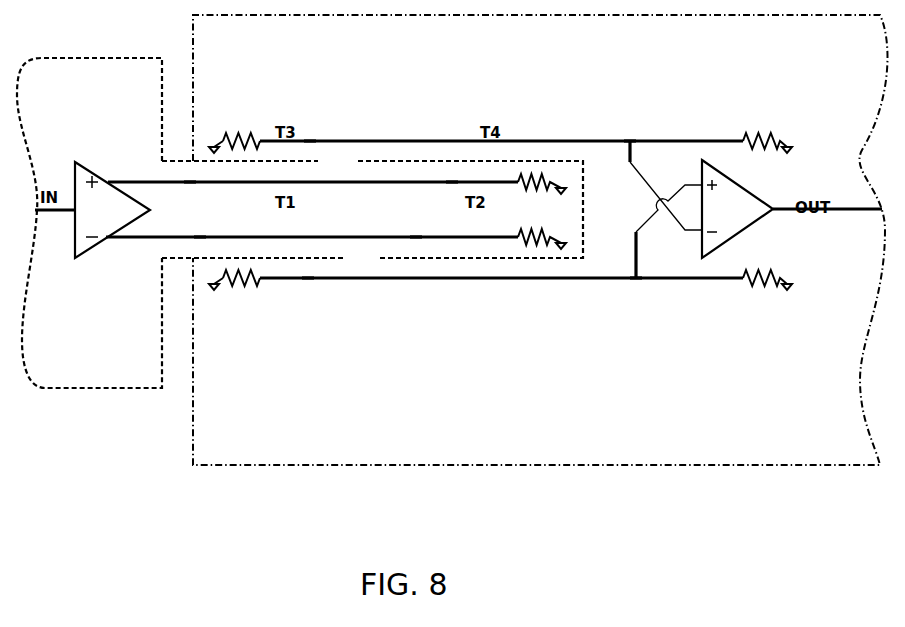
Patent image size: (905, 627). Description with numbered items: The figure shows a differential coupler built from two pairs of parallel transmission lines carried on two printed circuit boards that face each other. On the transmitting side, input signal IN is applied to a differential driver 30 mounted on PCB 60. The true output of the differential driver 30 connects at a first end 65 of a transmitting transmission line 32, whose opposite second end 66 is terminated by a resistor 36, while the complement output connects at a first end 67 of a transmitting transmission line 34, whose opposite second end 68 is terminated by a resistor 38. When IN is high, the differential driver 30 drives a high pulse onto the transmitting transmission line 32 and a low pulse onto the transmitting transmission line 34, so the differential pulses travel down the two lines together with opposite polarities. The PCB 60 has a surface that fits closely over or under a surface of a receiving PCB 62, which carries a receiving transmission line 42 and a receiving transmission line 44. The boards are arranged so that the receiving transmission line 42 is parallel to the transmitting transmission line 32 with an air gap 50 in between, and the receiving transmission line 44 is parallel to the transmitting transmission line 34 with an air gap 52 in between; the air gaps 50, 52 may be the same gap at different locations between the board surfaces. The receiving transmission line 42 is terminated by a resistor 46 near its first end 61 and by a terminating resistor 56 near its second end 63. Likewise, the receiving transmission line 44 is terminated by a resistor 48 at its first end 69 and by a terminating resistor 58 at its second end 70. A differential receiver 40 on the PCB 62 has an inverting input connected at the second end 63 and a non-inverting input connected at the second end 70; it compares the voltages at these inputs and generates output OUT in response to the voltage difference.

The differential driver 30 is at (112, 210).
The transmitting transmission line 32 is at (234, 184).
The transmitting transmission line 34 is at (342, 237).
The resistor 36 is at (520, 192).
The resistor 38 is at (545, 229).
The differential receiver 40 is at (737, 209).
The receiving transmission line 42 is at (380, 141).
The receiving transmission line 44 is at (395, 278).
The resistor 46 is at (247, 131).
The resistor 48 is at (250, 287).
The air gap 50 is at (372, 182).
The air gap 52 is at (372, 239).
The terminating resistor 56 is at (762, 134).
The terminating resistor 58 is at (757, 290).
The PCB 60 is at (89, 223).
The first end 61 is at (311, 140).
The PCB 62 is at (540, 240).
The second end 63 is at (623, 140).
The first end 65 is at (190, 184).
The second end 66 is at (452, 184).
The first end 67 is at (200, 236).
The second end 68 is at (416, 236).
The first end 69 is at (308, 279).
The second end 70 is at (633, 279).